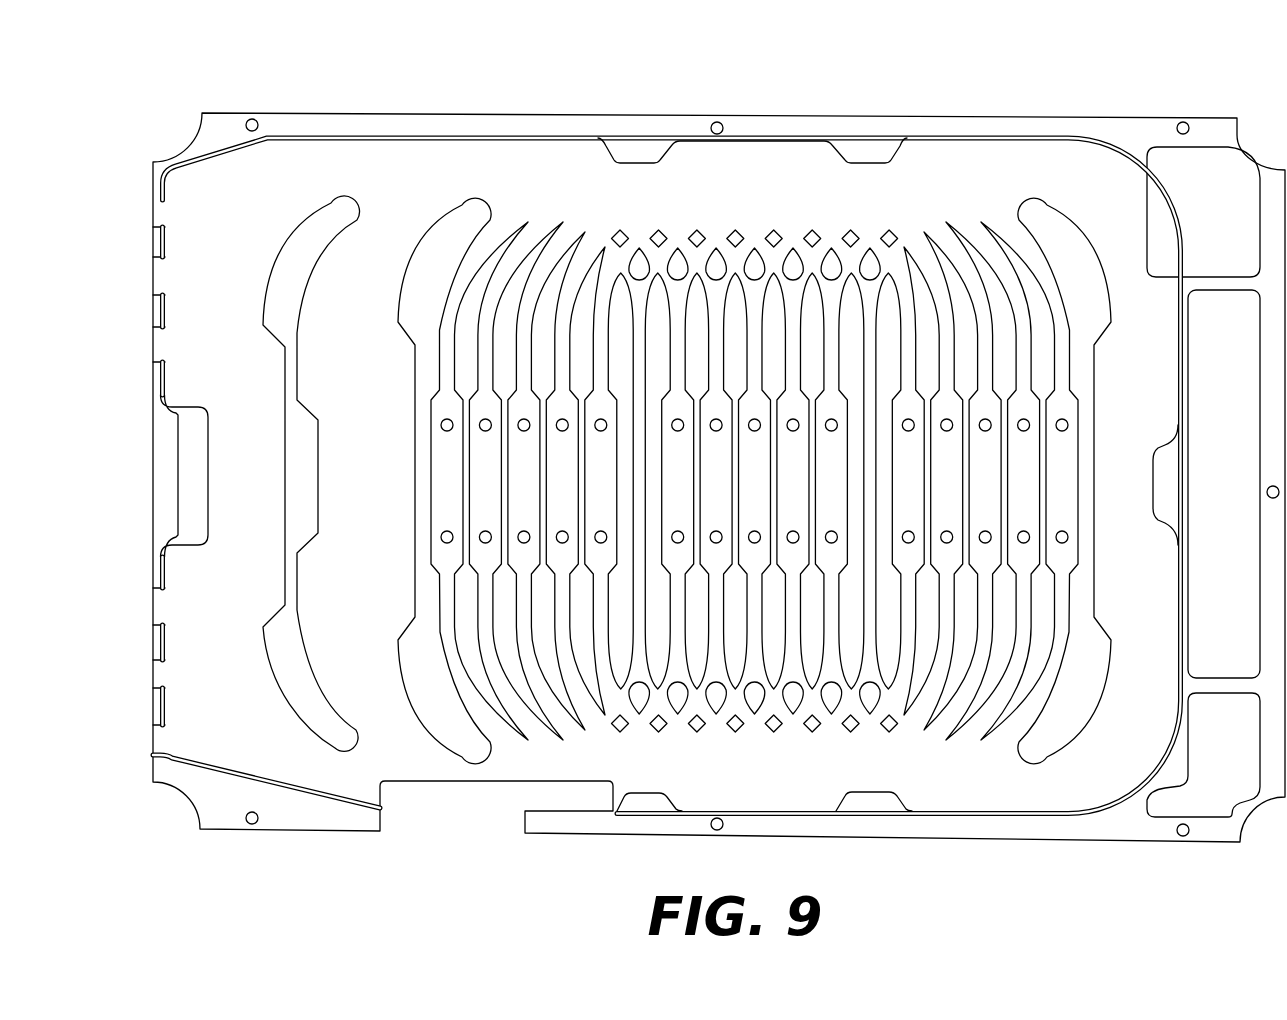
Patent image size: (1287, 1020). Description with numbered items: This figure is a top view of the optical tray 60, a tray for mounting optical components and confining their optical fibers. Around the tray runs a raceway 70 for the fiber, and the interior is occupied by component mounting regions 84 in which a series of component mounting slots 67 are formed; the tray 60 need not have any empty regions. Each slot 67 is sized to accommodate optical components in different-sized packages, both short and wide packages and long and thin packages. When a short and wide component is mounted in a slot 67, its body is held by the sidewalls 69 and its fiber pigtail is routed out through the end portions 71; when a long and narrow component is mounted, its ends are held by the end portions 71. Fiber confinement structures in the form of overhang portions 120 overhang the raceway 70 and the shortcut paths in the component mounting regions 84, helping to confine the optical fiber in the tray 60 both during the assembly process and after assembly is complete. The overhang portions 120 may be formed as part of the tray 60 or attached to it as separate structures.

The optical tray 60 is at (920, 85).
The raceway 70 is at (270, 173).
The component mounting regions 84 is at (586, 172).
The component mounting slots 67 is at (412, 410).
The sidewalls 69 is at (430, 452).
The end portions 71 is at (447, 353).
The overhang portions 120 is at (443, 212).